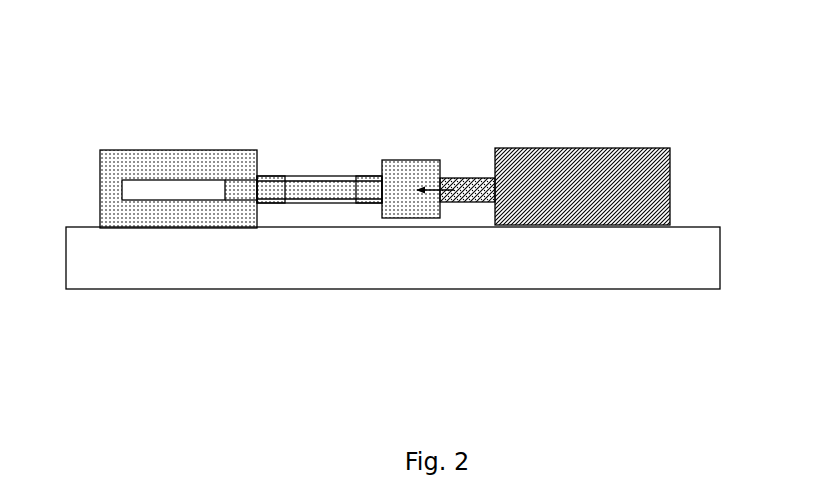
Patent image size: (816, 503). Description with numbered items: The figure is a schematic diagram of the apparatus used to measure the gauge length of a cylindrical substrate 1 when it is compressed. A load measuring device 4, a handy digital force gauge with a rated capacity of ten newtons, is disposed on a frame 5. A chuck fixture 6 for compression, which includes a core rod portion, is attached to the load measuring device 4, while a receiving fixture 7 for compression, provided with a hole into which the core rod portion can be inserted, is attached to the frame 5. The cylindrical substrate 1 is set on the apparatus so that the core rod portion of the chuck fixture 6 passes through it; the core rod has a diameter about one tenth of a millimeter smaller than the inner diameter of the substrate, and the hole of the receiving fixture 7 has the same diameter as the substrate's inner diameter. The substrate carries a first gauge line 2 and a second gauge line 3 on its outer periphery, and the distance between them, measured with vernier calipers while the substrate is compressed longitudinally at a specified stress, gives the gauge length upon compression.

The cylindrical substrate 1 is at (322, 174).
The first gauge line 2 is at (285, 174).
The second gauge line 3 is at (359, 174).
The load measuring device 4 is at (598, 145).
The frame 5 is at (399, 291).
The chuck fixture for compression 6 is at (413, 156).
The receiving fixture for compression 7 is at (192, 147).